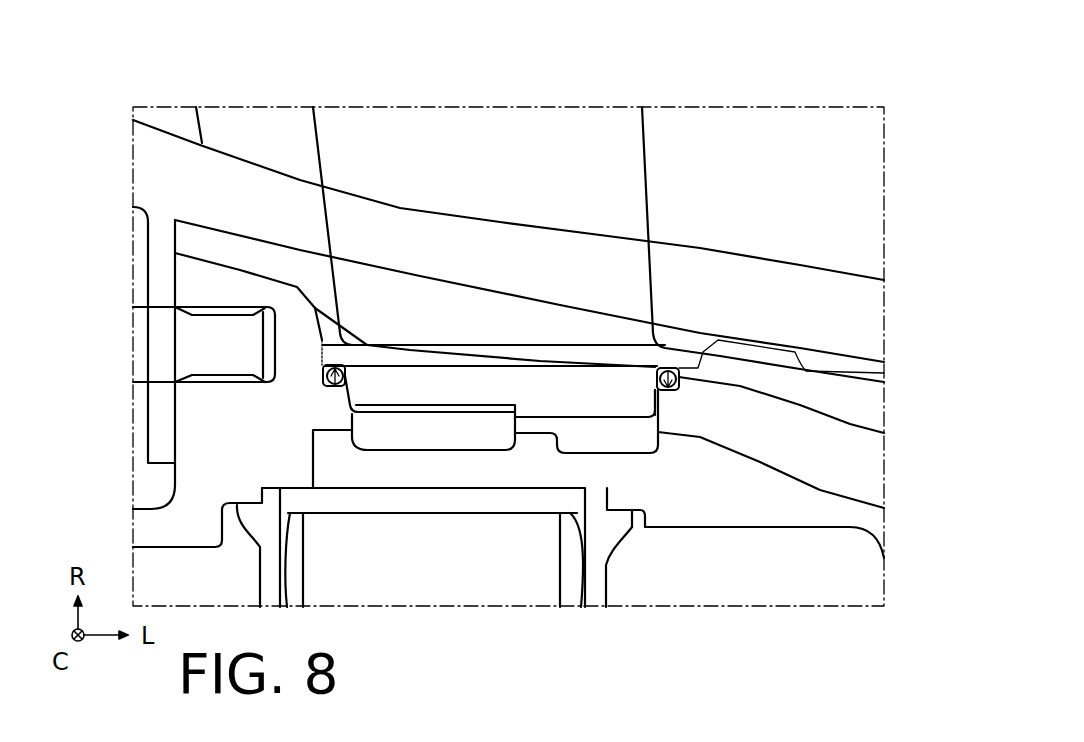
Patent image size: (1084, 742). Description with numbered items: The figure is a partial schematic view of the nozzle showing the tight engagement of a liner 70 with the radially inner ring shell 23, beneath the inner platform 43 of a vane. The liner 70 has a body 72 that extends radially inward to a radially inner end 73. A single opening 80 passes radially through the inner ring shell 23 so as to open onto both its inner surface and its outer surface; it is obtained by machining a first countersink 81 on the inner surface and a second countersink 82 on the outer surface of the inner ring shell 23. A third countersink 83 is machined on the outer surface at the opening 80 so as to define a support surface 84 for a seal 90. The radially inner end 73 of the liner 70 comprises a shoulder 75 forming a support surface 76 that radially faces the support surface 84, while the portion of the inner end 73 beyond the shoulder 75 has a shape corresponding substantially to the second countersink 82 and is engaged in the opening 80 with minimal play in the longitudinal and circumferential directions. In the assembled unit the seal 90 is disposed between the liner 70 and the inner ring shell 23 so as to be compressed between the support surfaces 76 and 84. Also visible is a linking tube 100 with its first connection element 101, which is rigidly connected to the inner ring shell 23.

The inner ring shell 23 is at (790, 510).
The inner platform 43 is at (250, 187).
The liner 70 is at (811, 68).
The body 72 is at (628, 152).
The radially inner end 73 is at (575, 390).
The shoulder 75 is at (700, 348).
The support surface 76 is at (332, 388).
The opening 80 is at (437, 489).
The first countersink 81 is at (313, 443).
The second countersink 82 is at (884, 508).
The third countersink 83 is at (884, 433).
The support surface 84 is at (672, 357).
The seal 90 is at (327, 378).
The linking tube 100 is at (570, 565).
The first connection element 101 is at (598, 567).